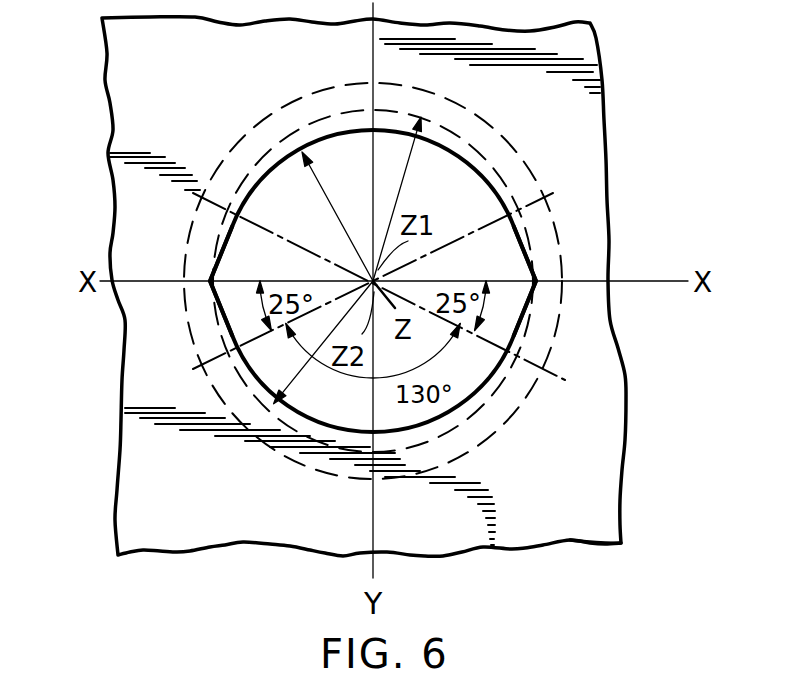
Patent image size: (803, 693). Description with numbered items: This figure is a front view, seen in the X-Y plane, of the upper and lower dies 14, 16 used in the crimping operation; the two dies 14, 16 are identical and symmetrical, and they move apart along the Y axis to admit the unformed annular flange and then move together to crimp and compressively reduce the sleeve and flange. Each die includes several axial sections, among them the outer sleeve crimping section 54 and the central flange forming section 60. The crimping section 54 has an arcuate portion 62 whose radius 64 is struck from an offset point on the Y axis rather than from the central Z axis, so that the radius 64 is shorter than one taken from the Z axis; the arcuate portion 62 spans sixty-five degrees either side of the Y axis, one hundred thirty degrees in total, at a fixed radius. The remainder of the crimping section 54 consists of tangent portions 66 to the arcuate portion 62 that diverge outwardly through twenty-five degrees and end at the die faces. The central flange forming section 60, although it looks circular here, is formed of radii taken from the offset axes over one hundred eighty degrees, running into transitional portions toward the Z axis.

The upper die 14 is at (588, 60).
The lower die 16 is at (600, 527).
The outer sleeve crimping section 54 is at (497, 133).
The central flange forming section 60 is at (548, 158).
The arcuate portion 62 is at (433, 137).
The radius 64 is at (343, 186).
The flat edges 66 is at (518, 237).